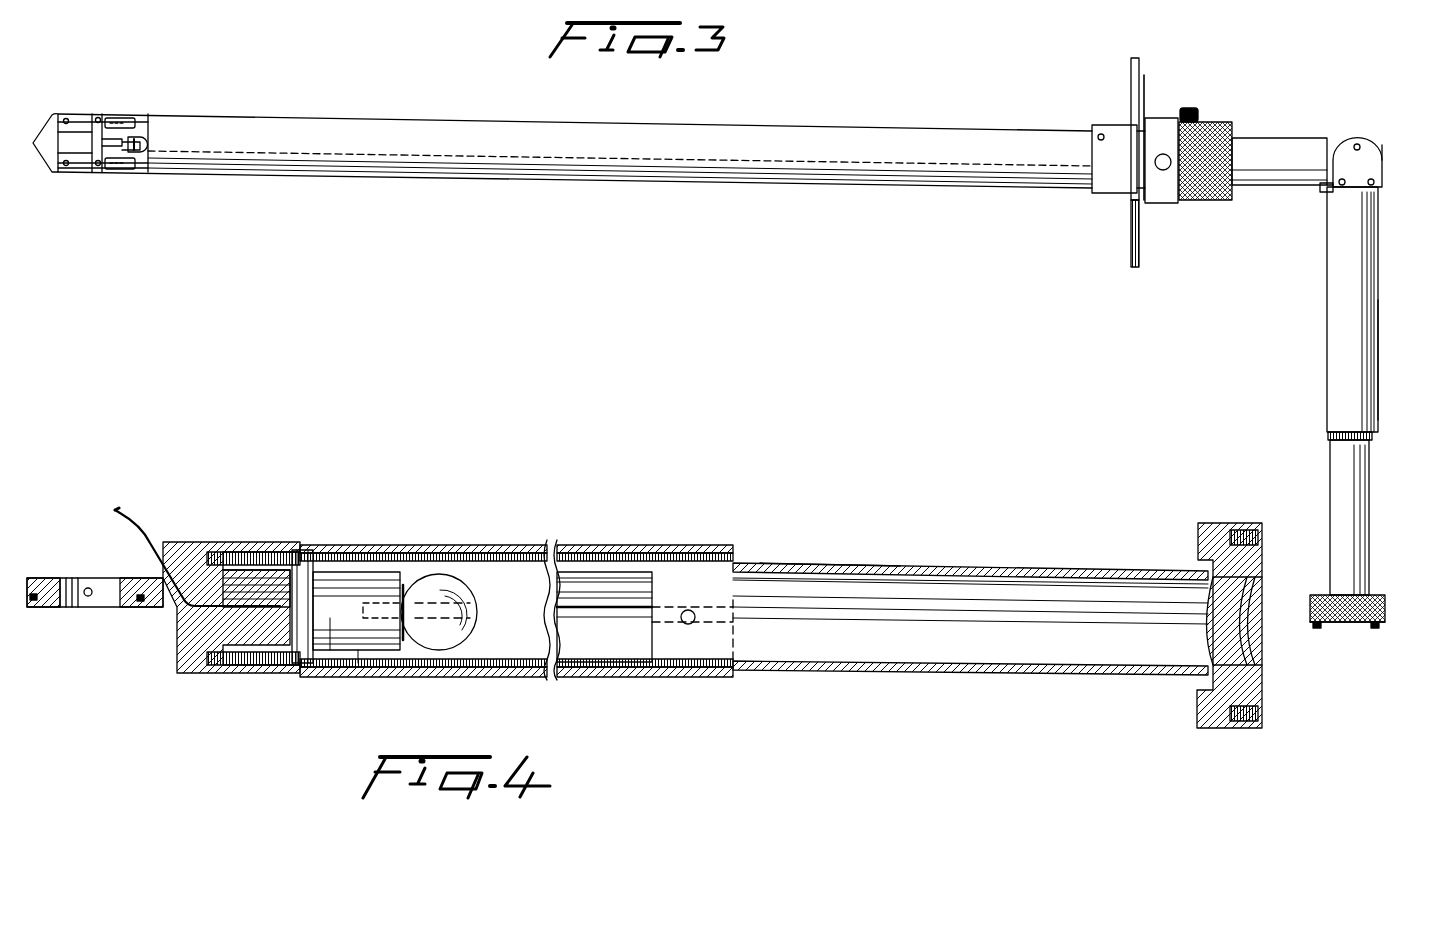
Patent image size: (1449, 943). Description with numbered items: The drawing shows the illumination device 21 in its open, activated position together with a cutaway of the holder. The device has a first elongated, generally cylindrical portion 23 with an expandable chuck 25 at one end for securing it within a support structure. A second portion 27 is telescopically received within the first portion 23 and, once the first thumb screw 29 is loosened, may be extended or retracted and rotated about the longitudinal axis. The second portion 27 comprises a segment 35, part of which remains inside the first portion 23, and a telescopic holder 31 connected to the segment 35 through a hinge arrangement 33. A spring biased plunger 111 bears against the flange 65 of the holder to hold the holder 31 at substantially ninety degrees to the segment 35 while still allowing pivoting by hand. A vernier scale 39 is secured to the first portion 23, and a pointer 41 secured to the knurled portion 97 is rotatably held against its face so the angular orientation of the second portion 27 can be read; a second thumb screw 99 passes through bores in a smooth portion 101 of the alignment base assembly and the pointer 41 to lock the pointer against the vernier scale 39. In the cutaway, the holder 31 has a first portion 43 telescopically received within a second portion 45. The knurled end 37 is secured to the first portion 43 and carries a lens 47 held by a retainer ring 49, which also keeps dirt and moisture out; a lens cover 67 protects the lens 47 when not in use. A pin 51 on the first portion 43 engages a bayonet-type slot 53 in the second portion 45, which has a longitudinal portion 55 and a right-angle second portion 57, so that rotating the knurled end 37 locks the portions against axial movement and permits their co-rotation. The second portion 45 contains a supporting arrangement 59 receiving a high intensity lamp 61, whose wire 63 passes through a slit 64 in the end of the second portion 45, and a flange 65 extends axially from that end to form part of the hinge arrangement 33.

In FIG. 3, the illumination device 21 is at (748, 183).
In FIG. 3, the first elongated, generally cylindrical portion 23 is at (365, 120).
In FIG. 3, the expandable chuck 25 is at (122, 113).
In FIG. 3, the second portion 27 is at (1328, 137).
In FIG. 3, the first thumb screw 29 is at (1193, 110).
In FIG. 3, the telescopic holder 31 is at (1378, 363).
In FIG. 4, the telescopic holder 31 is at (780, 558).
In FIG. 3, the hinge arrangement 33 is at (1381, 146).
In FIG. 3, the segment 35 is at (1276, 142).
In FIG. 3, the knurled end 37 is at (1383, 597).
In FIG. 4, the knurled end 37 is at (1207, 523).
In FIG. 3, the vernier scale 39 is at (1131, 72).
In FIG. 3, the pointer 41 is at (1145, 75).
In FIG. 3, the first portion of the holder 43 is at (1357, 512).
In FIG. 4, the first portion of the holder 43 is at (931, 564).
In FIG. 3, the second portion of the holder 45 is at (1368, 290).
In FIG. 4, the second portion of the holder 45 is at (378, 546).
In FIG. 4, the lens 47 is at (1210, 608).
In FIG. 4, the retainer ring 49 is at (1259, 672).
In FIG. 4, the pin 51 is at (691, 610).
In FIG. 4, the bayonet-type slot 53 is at (585, 606).
In FIG. 4, the longitudinal portion 55 is at (611, 612).
In FIG. 4, the second portion of the slot 57 is at (367, 658).
In FIG. 4, the supporting arrangement 59 is at (301, 560).
In FIG. 4, the high intensity lamp 61 is at (456, 584).
In FIG. 4, the wire 63 is at (141, 530).
In FIG. 4, the slit 64 is at (186, 580).
In FIG. 4, the flange 65 is at (38, 578).
In FIG. 3, the lens cover 67 is at (1346, 626).
In FIG. 3, the knurled portion 97 is at (1226, 125).
In FIG. 3, the second thumb screw 99 is at (1164, 171).
In FIG. 3, the smooth portion 101 is at (1157, 124).
In FIG. 3, the spring biased plunger 111 is at (1325, 189).